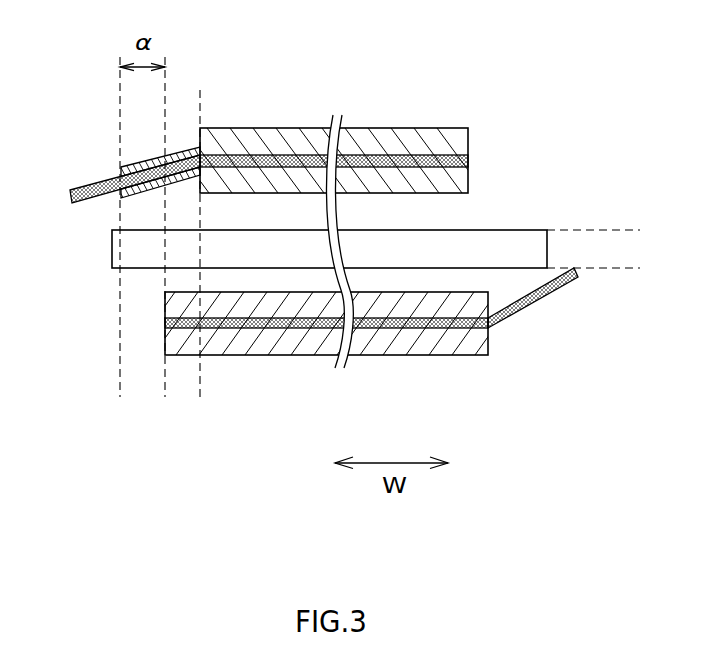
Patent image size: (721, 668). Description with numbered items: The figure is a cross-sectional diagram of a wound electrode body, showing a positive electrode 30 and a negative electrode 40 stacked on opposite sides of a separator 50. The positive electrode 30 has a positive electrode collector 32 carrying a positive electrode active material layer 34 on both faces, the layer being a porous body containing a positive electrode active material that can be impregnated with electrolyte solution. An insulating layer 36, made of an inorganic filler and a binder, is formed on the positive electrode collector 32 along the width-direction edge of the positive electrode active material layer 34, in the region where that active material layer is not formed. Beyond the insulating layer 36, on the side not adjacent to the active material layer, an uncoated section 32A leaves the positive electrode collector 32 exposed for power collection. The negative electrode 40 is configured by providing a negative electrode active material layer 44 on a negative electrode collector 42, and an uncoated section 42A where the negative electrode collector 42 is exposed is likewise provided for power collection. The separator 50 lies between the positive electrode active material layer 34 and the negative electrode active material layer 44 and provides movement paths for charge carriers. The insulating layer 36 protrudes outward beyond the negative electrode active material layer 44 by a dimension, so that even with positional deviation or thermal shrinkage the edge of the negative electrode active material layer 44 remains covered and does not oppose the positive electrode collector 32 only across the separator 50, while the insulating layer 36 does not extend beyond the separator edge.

The positive electrode 30 is at (281, 117).
The positive electrode collector 32 is at (281, 168).
The uncoated section 32A is at (83, 186).
The positive electrode active material layer 34 is at (468, 144).
The insulating layer 36 is at (160, 187).
The negative electrode 40 is at (365, 350).
The negative electrode collector 42 is at (416, 314).
The uncoated section 42A is at (548, 295).
The negative electrode active material layer 44 is at (172, 307).
The separator 50 is at (112, 249).